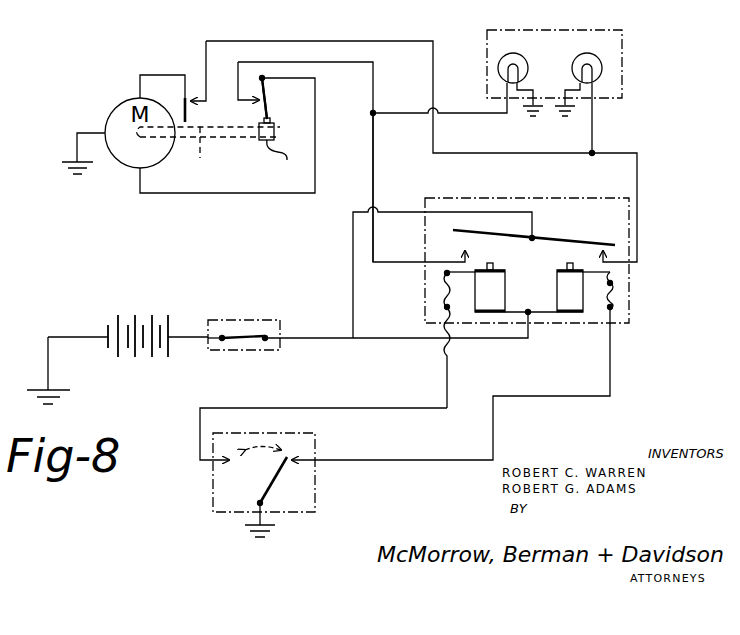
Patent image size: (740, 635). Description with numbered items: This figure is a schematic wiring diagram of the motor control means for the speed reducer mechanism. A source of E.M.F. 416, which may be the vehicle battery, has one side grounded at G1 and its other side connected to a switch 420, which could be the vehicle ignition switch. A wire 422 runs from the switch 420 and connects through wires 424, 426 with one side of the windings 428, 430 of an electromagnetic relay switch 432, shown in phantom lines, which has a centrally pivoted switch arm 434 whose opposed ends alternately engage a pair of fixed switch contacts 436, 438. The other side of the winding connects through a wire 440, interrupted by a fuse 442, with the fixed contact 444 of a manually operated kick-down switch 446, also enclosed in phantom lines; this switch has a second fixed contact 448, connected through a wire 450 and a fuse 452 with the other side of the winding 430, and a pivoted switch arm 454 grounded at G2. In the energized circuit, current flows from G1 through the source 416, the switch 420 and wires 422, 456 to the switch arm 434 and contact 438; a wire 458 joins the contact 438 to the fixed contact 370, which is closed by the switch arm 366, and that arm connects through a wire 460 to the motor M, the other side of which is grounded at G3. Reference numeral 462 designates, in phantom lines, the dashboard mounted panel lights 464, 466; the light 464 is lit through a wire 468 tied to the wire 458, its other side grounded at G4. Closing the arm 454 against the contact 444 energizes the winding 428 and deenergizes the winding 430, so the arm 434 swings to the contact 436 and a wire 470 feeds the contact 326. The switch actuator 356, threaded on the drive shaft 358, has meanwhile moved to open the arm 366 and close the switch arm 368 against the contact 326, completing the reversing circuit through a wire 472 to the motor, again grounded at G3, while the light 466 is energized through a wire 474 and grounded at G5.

The contact 326 is at (258, 106).
The switch actuator 356 is at (281, 162).
The drive shaft 358 is at (196, 174).
The switch arm 366 is at (187, 86).
The switch arm 368 is at (282, 100).
The fixed switch contact 370 is at (200, 103).
The source of E.M.F. 416 is at (153, 318).
The switch 420 is at (250, 334).
The wire 422 is at (318, 340).
The wire 424 is at (517, 310).
The wire 426 is at (543, 315).
The winding 428 is at (495, 285).
The winding 430 is at (582, 298).
The electromagnetic relay switch 432 is at (638, 288).
The switch arm 434 is at (556, 238).
The fixed switch contact 436 is at (461, 256).
The fixed switch contact 438 is at (603, 253).
The wire 440 is at (406, 410).
The fuse 442 is at (440, 292).
The fixed contact 444 is at (233, 463).
The kick-down switch 446 is at (210, 502).
The second fixed contact 448 is at (297, 463).
The wire 450 is at (612, 388).
The fuse 452 is at (613, 303).
The pivoted switch arm 454 is at (270, 477).
The wire 456 is at (353, 237).
The wire 458 is at (638, 203).
The wire 460 is at (163, 74).
The dashboard mounted panel lights 462 is at (625, 63).
The light 464 is at (598, 58).
The light 466 is at (497, 67).
The wire 468 is at (593, 125).
The wire 470 is at (373, 173).
The wire 472 is at (315, 162).
The wire 474 is at (469, 116).
The ground G1 is at (72, 391).
The ground G2 is at (277, 525).
The ground G3 is at (62, 161).
The ground G4 is at (556, 113).
The ground G5 is at (542, 116).